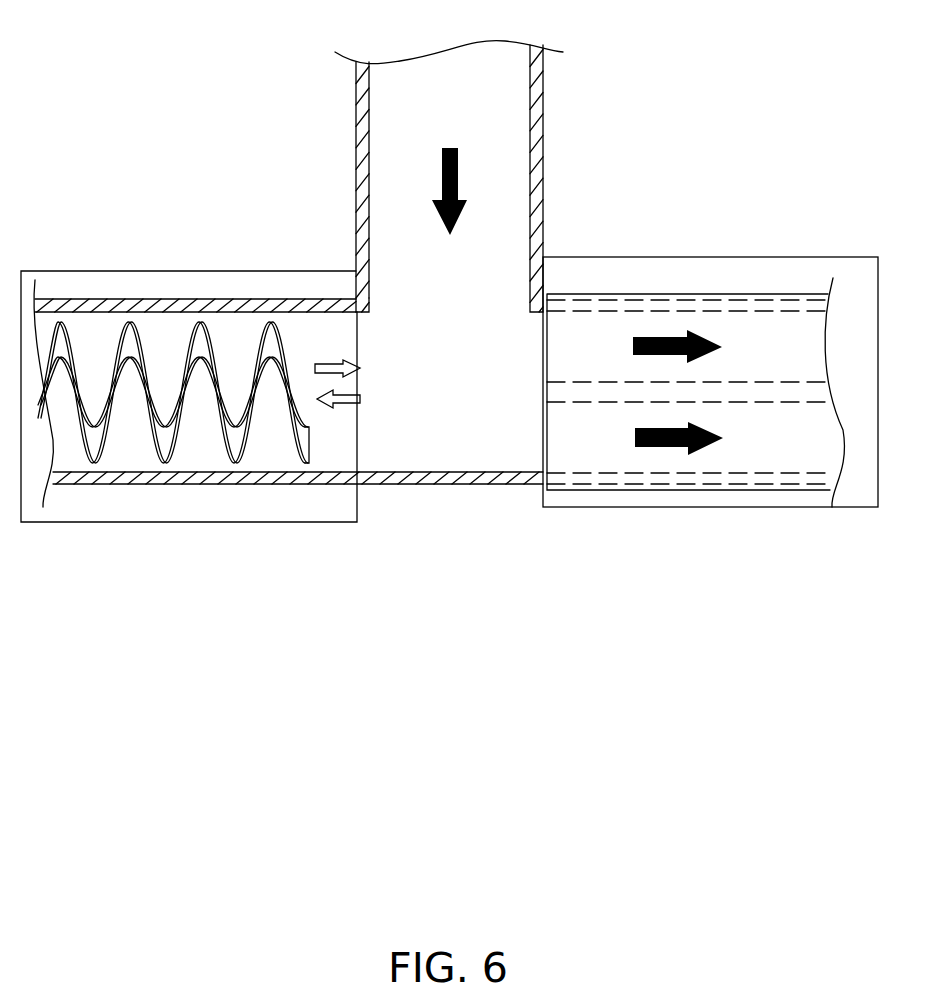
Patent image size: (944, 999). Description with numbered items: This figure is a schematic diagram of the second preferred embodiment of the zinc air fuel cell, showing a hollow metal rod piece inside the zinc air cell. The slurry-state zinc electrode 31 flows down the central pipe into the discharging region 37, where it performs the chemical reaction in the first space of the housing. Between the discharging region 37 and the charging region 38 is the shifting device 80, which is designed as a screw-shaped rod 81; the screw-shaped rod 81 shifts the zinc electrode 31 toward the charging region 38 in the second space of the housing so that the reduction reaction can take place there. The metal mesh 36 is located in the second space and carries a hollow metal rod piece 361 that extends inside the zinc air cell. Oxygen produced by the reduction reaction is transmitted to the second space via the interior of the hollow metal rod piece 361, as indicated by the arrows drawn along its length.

The discharging region 37 is at (328, 108).
The zinc electrode 31 is at (387, 196).
The shifting device 80 is at (190, 271).
The screw-shaped rod 81 is at (173, 443).
The charging region 38 is at (762, 257).
The metal mesh 36 is at (688, 295).
The hollow metal rod piece 361 is at (762, 392).